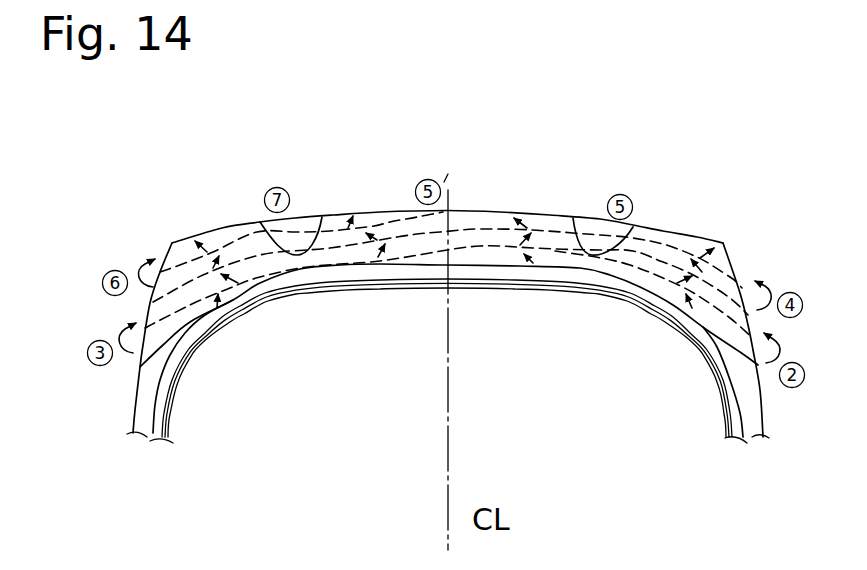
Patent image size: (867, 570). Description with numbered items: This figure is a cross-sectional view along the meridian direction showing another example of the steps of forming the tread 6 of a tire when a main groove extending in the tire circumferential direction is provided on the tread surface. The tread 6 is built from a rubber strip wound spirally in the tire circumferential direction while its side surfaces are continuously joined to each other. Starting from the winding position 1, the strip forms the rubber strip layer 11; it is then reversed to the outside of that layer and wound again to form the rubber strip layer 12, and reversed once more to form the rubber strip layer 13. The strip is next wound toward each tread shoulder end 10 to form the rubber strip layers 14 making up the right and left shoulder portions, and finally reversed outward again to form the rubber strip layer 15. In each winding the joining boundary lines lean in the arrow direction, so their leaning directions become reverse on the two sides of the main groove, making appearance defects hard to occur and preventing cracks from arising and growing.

The winding start position 1 is at (420, 261).
The tread 6 is at (399, 208).
The tread shoulder end 10 is at (172, 243).
The rubber strip layer 11 is at (487, 258).
The rubber strip layer 12 is at (553, 241).
The rubber strip layer 13 is at (487, 217).
The rubber strip layer 14 is at (333, 226).
The rubber strip layer 15 is at (223, 230).